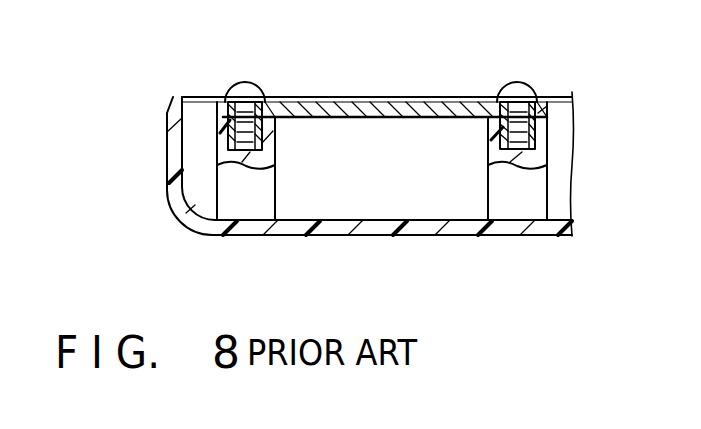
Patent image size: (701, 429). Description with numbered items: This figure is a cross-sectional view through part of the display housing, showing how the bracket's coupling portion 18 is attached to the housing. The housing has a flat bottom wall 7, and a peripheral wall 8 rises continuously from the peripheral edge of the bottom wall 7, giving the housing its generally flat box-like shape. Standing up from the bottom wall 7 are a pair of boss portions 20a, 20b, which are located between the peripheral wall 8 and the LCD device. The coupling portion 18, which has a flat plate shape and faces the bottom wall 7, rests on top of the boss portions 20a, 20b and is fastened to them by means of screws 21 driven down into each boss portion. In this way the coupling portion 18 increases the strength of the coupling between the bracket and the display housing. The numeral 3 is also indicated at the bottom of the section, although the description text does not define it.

The peripheral wall 8 is at (165, 143).
The boss portion 20b is at (223, 195).
The boss portion 20a is at (530, 182).
The coupling portion 18 is at (385, 108).
The screw 21 is at (245, 88).
The bottom wall 7 is at (365, 225).
The base plate 3 is at (535, 228).